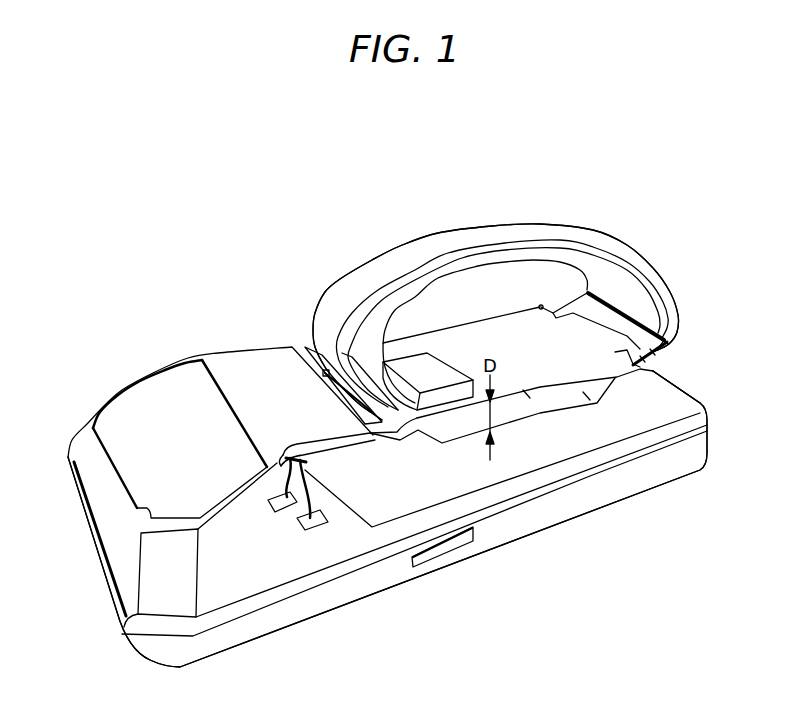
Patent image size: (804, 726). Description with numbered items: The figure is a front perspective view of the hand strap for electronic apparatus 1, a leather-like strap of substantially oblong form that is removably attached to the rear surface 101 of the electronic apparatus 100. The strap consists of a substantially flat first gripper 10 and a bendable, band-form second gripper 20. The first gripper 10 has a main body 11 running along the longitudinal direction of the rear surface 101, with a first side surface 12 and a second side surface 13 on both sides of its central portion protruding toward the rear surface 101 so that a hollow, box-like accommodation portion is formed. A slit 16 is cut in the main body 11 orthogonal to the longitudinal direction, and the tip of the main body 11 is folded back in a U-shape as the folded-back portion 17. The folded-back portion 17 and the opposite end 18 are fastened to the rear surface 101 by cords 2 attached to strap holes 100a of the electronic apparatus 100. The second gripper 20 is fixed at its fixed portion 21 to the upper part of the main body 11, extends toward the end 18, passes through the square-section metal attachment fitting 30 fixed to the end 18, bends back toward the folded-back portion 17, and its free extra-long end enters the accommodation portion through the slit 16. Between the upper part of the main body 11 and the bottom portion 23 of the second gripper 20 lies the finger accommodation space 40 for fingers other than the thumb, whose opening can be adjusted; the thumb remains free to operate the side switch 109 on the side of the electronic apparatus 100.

The hand strap for electronic apparatus 1 is at (404, 222).
The cords 2 is at (312, 474).
The first gripper 10 is at (398, 437).
The main body 11 is at (523, 390).
The first side surface 12 is at (583, 392).
The second side surface 13 is at (482, 317).
The slit 16 is at (326, 366).
The folded-back portion 17 is at (237, 372).
The end 18 is at (598, 330).
The second gripper 20 is at (478, 228).
The fixed portion 21 is at (413, 360).
The bottom portion 23 is at (547, 263).
The metal attachment fitting 30 is at (668, 342).
The finger accommodation space 40 is at (573, 278).
The electronic apparatus 100 is at (313, 595).
The strap holes 100a is at (277, 503).
The rear surface 101 is at (628, 413).
The side switch 109 is at (447, 552).